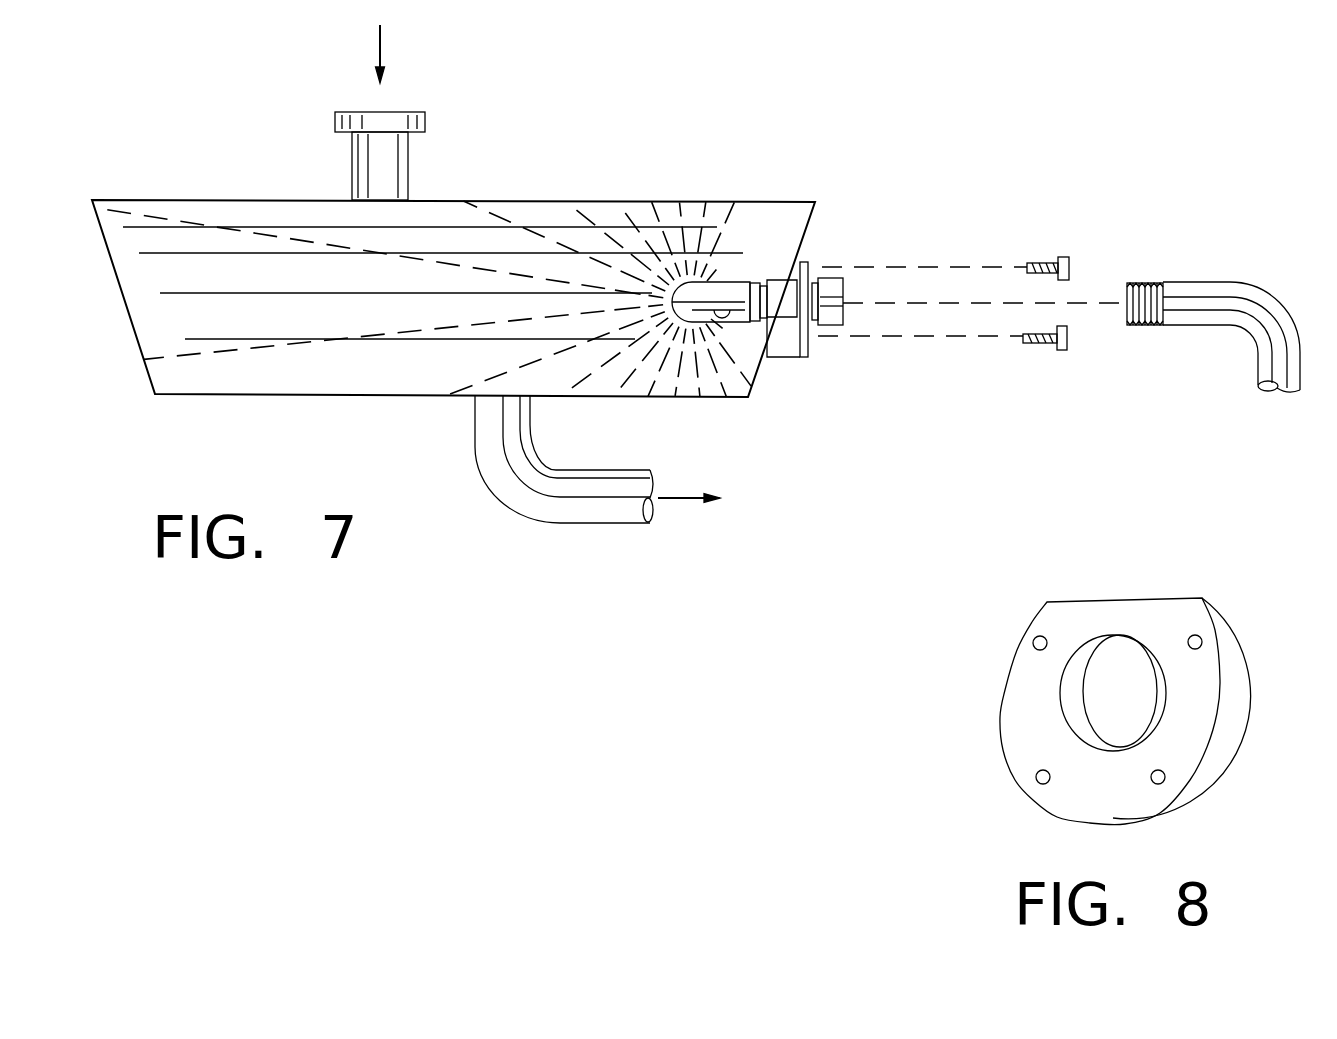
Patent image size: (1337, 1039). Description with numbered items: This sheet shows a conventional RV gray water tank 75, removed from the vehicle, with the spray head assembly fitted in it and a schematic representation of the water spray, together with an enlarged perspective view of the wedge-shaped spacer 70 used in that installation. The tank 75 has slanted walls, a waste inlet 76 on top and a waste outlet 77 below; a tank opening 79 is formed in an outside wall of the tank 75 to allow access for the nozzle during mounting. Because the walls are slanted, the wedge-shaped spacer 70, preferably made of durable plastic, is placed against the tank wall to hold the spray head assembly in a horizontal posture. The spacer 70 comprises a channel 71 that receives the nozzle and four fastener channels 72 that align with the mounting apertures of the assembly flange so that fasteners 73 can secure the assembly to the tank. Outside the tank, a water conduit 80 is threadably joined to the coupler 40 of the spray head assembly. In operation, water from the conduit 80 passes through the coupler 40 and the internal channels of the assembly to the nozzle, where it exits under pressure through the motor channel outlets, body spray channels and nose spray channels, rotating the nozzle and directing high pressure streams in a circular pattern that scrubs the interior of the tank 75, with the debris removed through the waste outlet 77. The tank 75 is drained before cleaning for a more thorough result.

In FIG. 7, the coupler 40 is at (836, 259).
In FIG. 7, the wedge-shaped spacer 70 is at (785, 348).
In FIG. 8, the wedge-shaped spacer 70 is at (1130, 579).
In FIG. 8, the channel 71 is at (1087, 714).
In FIG. 8, the fastener channels 72 is at (1023, 633).
In FIG. 7, the fasteners 73 is at (1035, 267).
In FIG. 7, the RV gray water tank 75 is at (765, 191).
In FIG. 7, the waste inlet 76 is at (408, 163).
In FIG. 7, the waste outlet 77 is at (485, 456).
In FIG. 7, the tank opening 79 is at (780, 271).
In FIG. 7, the conduit 80 is at (1275, 283).